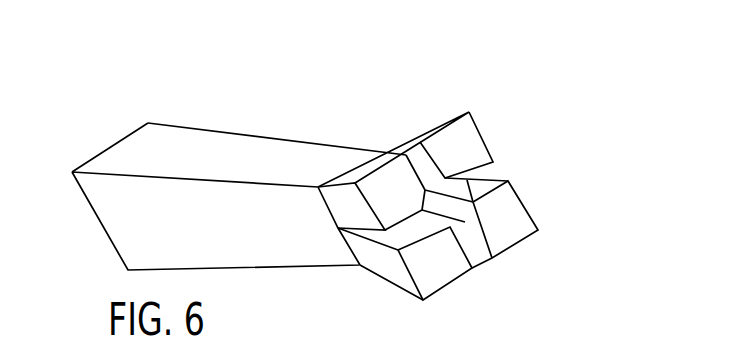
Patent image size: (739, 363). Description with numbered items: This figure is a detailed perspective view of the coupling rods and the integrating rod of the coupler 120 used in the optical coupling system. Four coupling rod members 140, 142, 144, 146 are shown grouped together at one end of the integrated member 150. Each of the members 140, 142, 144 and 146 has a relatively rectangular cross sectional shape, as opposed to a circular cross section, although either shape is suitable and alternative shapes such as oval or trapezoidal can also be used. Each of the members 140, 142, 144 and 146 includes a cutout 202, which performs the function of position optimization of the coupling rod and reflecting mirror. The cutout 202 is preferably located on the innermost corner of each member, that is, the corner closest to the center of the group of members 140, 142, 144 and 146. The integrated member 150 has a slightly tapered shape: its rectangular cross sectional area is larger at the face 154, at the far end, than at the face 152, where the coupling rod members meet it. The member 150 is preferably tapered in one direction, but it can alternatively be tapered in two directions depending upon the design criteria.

The coupler 120 is at (363, 48).
The member 140 is at (524, 202).
The member 142 is at (453, 271).
The member 144 is at (421, 140).
The member 146 is at (355, 170).
The integrated member 150 is at (268, 136).
The face 152 is at (340, 226).
The face 154 is at (108, 147).
The cutout 202 is at (468, 180).